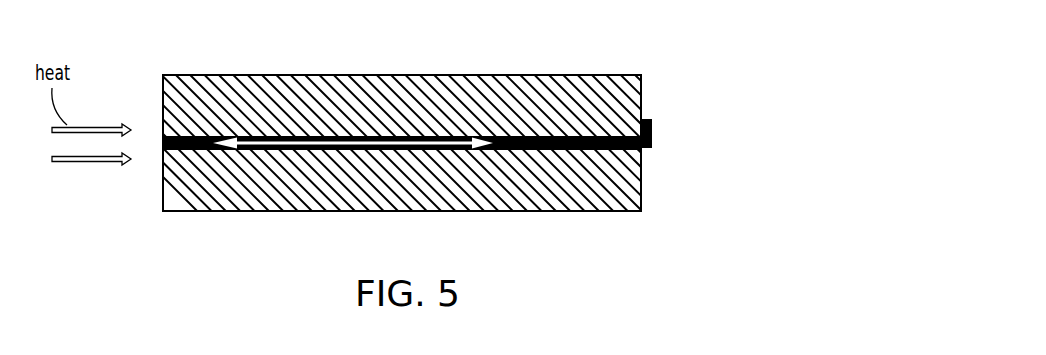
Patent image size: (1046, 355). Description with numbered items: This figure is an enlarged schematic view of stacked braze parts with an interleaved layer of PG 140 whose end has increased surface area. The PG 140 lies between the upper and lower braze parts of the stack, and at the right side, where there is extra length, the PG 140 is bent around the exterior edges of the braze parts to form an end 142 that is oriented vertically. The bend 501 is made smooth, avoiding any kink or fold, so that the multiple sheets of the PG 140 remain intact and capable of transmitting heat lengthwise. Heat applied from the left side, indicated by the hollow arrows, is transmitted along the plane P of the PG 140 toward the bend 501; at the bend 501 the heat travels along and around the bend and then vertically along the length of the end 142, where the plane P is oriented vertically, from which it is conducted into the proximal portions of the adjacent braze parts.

The PG 140 is at (394, 136).
The plane P is at (308, 138).
The end 142 is at (652, 124).
The bend 501 is at (652, 143).